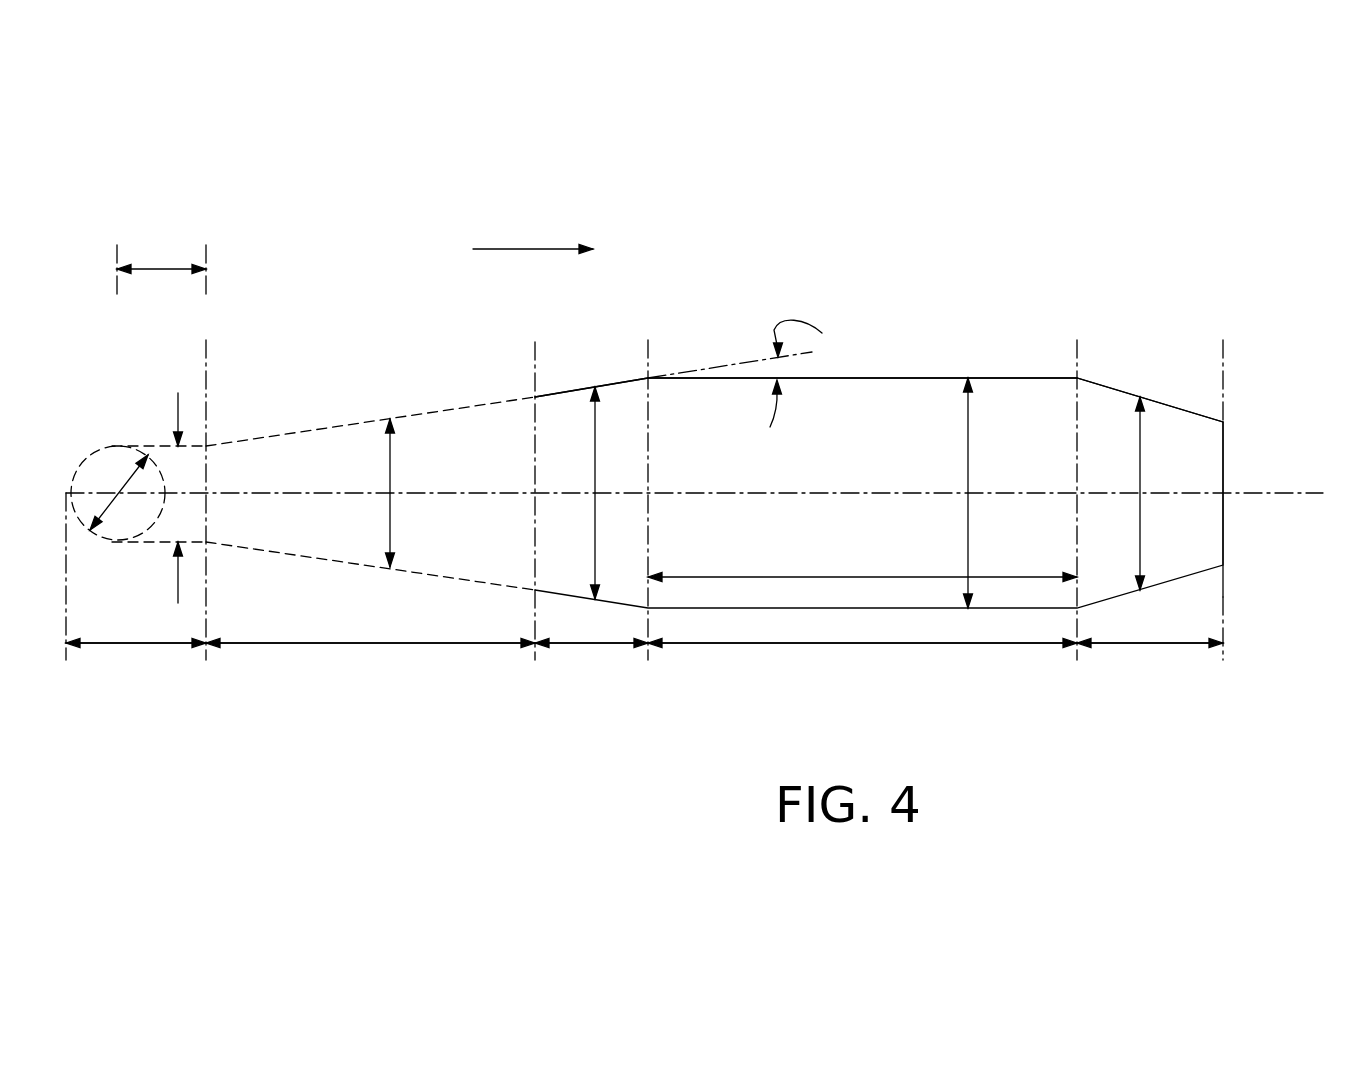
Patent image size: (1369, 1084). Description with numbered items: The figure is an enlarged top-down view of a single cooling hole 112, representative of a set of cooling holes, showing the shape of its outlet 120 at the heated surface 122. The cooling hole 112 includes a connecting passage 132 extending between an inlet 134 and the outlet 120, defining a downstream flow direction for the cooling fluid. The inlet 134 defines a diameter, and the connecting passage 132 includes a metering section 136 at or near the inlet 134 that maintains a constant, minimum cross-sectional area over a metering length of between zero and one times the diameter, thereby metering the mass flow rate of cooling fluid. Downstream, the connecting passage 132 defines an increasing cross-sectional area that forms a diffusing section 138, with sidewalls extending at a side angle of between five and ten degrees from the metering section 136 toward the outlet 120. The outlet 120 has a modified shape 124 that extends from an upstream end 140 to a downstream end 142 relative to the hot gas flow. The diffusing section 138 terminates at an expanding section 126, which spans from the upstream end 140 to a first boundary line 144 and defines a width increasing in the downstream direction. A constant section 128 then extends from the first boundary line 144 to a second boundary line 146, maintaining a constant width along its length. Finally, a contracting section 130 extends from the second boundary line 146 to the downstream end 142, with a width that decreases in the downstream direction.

The cooling hole 112 is at (1080, 223).
The outlet 120 is at (1028, 405).
The heated surface 122 is at (913, 242).
The modified shape 124 is at (903, 378).
The expanding section 126 is at (575, 645).
The constant section 128 is at (815, 645).
The contracting section 130 is at (1140, 645).
The connecting passage 132 is at (278, 457).
The inlet 134 is at (110, 444).
The metering section 136 is at (112, 645).
The diffusing section 138 is at (335, 645).
The upstream end 140 is at (535, 421).
The downstream end 142 is at (1223, 538).
The first boundary line 144 is at (648, 407).
The second boundary line 146 is at (1077, 415).